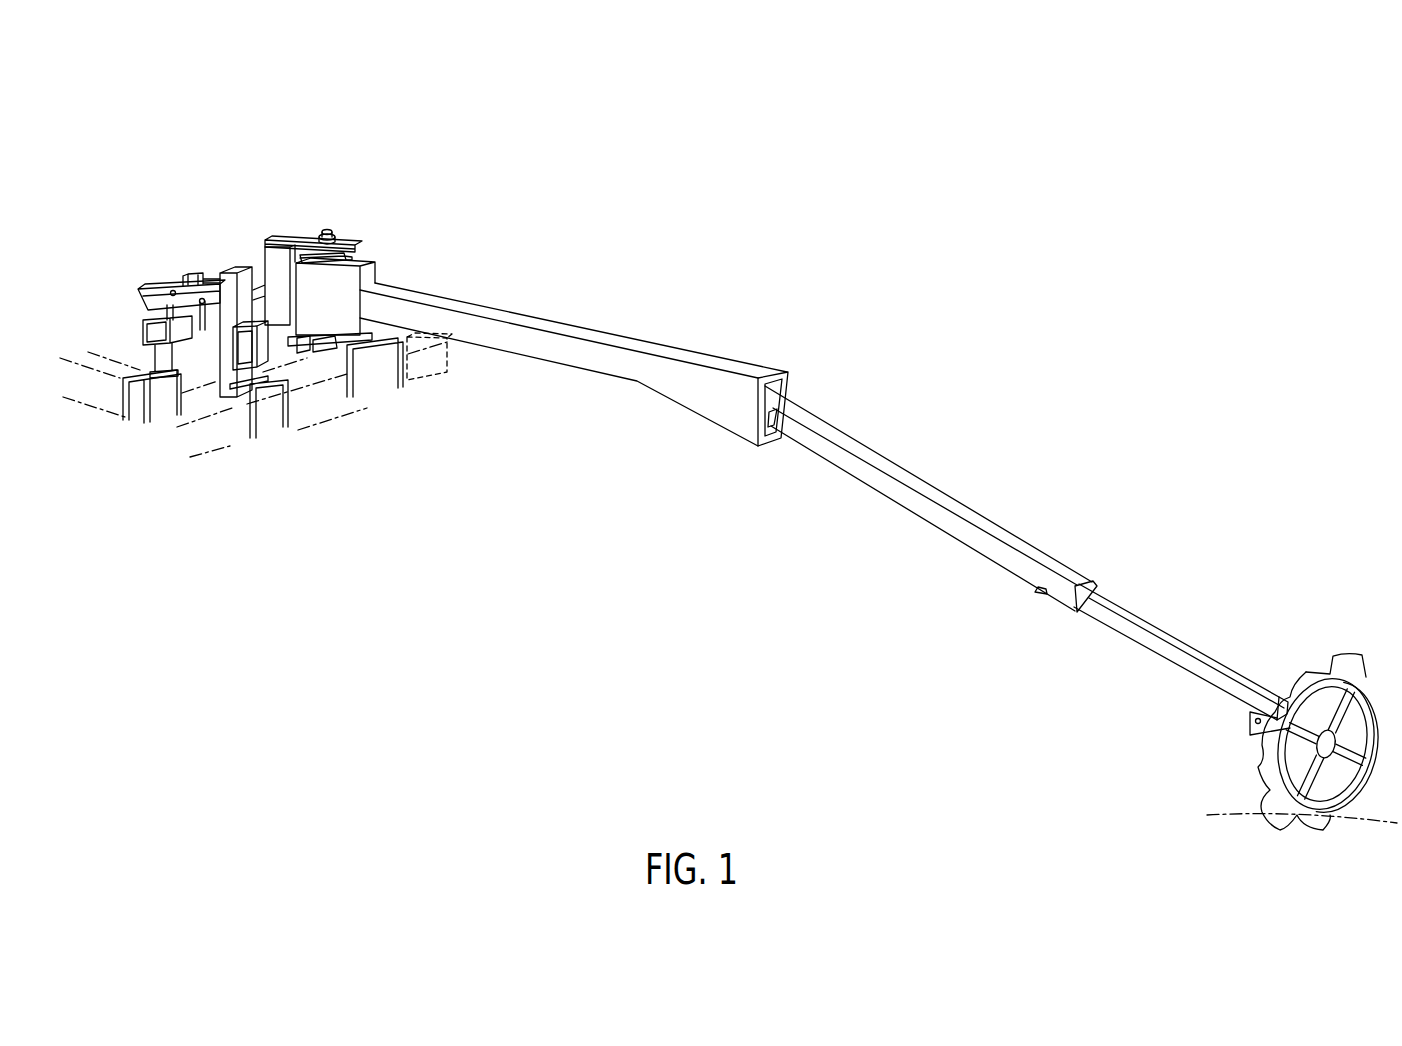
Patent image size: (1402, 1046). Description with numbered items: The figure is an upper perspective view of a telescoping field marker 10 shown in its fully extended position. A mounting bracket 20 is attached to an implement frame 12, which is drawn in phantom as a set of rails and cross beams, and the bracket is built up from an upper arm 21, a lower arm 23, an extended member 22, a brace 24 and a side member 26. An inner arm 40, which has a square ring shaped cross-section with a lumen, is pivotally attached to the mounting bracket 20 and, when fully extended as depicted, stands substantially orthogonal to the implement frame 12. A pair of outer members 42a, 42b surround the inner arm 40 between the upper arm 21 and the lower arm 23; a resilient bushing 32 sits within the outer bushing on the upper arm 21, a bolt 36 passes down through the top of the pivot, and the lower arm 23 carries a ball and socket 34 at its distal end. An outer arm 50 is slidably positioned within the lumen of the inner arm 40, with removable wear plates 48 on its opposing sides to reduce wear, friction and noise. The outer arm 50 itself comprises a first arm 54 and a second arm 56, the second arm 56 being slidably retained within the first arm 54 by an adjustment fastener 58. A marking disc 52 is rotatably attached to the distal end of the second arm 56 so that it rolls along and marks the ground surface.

The telescoping field marker 10 is at (1080, 270).
The implement frame 12 is at (223, 447).
The mounting bracket 20 is at (255, 263).
The upper arm 21 is at (293, 238).
The extended member 22 is at (143, 298).
The lower arm 23 is at (303, 352).
The brace 24 is at (217, 277).
The side member 26 is at (160, 285).
The resilient bushing 32 is at (338, 243).
The ball and socket 34 is at (317, 353).
The pivot bolt 36 is at (323, 233).
The inner arm 40 is at (492, 308).
The outer member 42a is at (370, 272).
The outer member 42b is at (347, 357).
The wear plates 48 is at (773, 420).
The outer arm 50 is at (1053, 547).
The marking disc 52 is at (1306, 672).
The first arm 54 is at (880, 485).
The second arm 56 is at (1153, 648).
The adjustment fastener 58 is at (1037, 593).